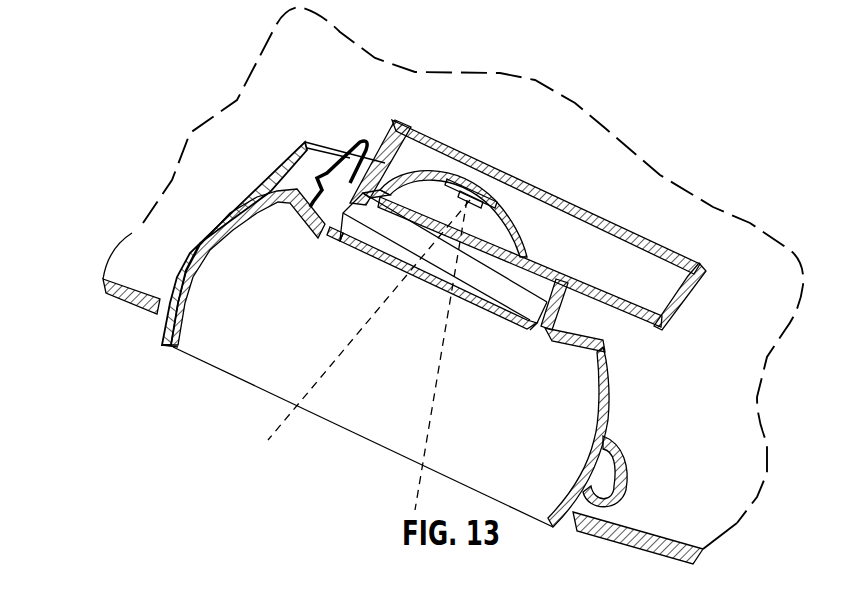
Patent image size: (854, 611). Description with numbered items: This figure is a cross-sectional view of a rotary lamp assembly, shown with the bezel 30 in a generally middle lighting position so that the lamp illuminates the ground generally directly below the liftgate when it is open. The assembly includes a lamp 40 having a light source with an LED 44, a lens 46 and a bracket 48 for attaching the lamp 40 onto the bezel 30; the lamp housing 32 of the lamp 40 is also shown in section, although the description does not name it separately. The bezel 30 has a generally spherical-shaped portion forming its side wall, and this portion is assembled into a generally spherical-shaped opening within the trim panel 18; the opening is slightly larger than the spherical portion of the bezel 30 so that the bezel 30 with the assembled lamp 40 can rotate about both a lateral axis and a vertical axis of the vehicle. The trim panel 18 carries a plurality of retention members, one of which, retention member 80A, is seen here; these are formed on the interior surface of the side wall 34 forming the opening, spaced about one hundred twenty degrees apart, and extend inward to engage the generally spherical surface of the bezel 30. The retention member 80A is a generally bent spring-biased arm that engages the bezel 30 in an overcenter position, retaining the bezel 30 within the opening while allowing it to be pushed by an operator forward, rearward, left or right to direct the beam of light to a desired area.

The trim panel 18 is at (122, 303).
The bezel 30 is at (178, 318).
The frame 32 is at (586, 186).
The side wall 34 is at (190, 250).
The lamp 40 is at (366, 110).
The LED 44 is at (470, 186).
The lens 46 is at (487, 312).
The bracket 48 is at (366, 138).
The retention member 80A is at (625, 473).